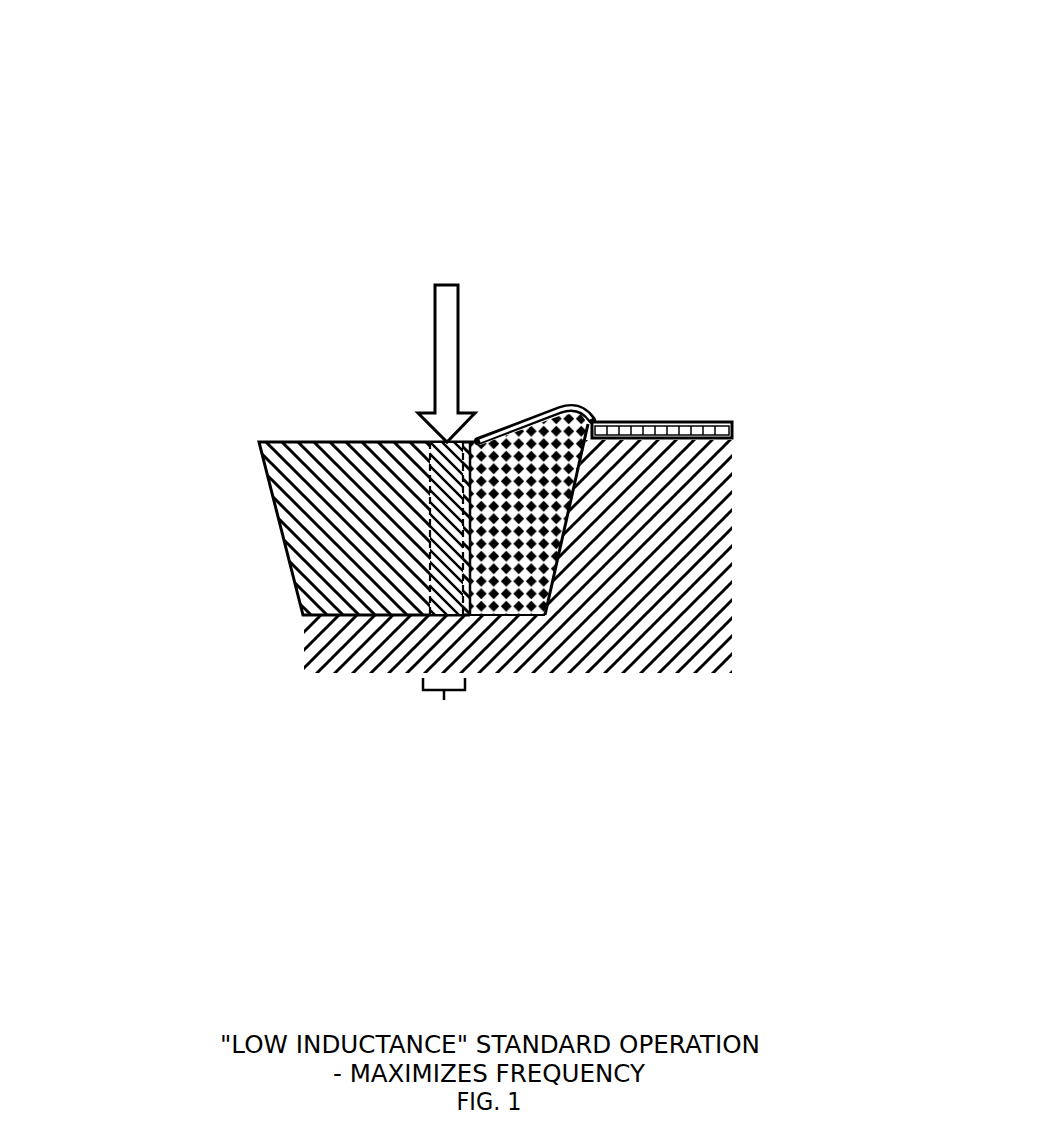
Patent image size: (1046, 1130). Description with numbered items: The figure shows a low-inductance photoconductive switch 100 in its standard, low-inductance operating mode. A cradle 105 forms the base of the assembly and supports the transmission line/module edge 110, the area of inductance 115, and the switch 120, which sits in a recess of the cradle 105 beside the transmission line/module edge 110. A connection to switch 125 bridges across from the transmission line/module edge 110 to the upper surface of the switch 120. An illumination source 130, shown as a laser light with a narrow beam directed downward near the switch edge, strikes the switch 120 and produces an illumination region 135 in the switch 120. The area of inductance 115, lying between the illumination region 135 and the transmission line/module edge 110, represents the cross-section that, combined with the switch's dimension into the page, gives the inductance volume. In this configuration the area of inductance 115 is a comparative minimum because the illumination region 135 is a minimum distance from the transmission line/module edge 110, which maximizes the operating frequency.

The low-inductance photoconductive switch 100 is at (47, 31).
The cradle 105 is at (636, 677).
The transmission line/module edge 110 is at (670, 420).
The area of inductance 115 is at (527, 556).
The switch 120 is at (282, 535).
The connection to switch 125 is at (563, 406).
The illumination source 130 is at (447, 284).
The illumination region 135 is at (445, 704).